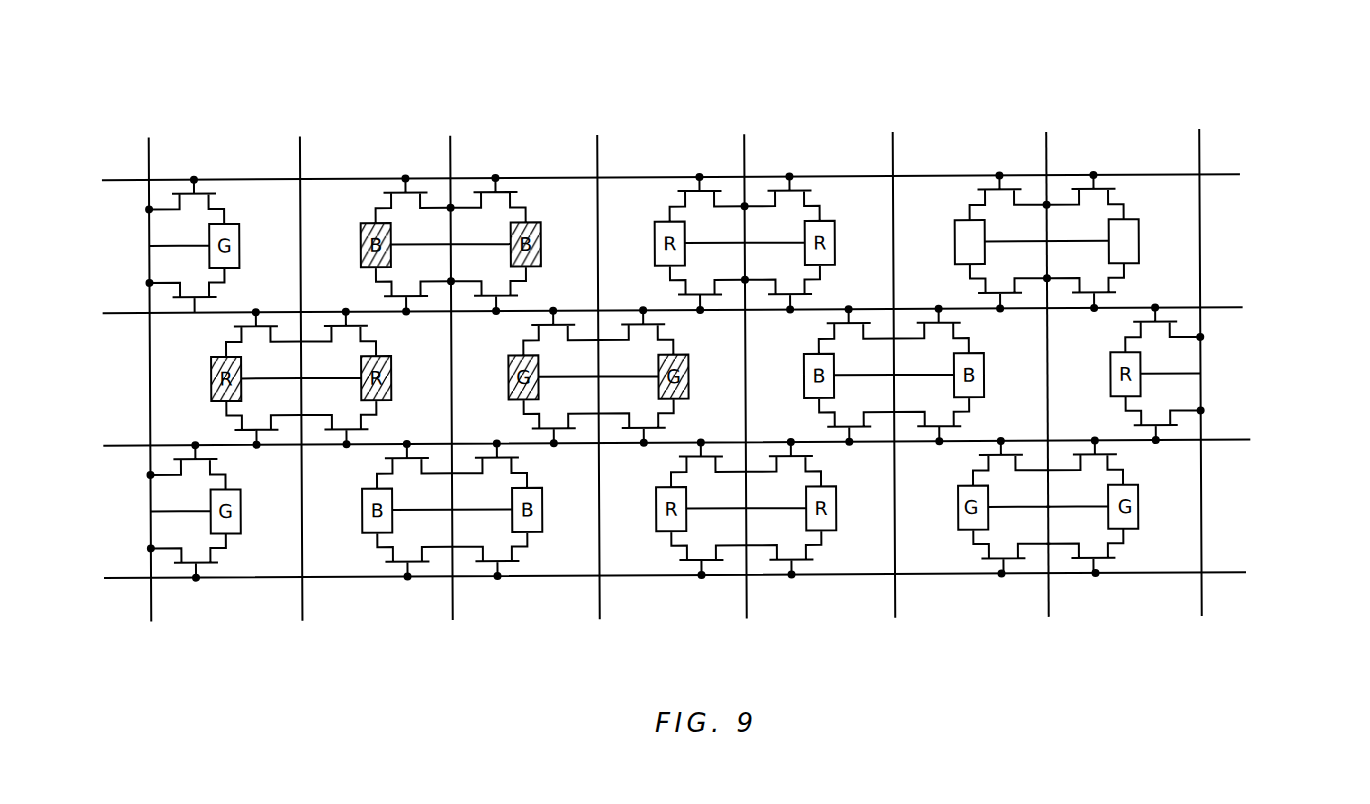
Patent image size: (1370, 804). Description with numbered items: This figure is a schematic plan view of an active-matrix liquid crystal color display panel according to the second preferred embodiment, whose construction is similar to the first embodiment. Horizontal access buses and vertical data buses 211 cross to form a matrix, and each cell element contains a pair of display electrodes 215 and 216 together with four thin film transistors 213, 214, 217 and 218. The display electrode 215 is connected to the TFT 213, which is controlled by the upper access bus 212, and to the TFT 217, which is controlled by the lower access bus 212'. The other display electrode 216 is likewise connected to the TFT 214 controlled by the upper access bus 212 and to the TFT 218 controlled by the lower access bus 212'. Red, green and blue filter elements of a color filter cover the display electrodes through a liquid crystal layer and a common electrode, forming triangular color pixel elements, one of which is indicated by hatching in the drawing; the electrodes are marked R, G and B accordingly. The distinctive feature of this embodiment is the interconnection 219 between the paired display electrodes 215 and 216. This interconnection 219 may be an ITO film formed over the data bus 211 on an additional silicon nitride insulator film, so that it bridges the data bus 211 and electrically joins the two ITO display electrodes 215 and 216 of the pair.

The data bus 211 is at (1048, 134).
The upper access bus 212 is at (716, 155).
The lower access bus 212' is at (720, 330).
The TFT 213 is at (1012, 188).
The TFT 214 is at (1101, 189).
The display electrode 215 is at (961, 222).
The display electrode 216 is at (1136, 242).
The TFT 217 is at (981, 285).
The TFT 218 is at (1122, 288).
The interconnection 219 is at (1034, 244).